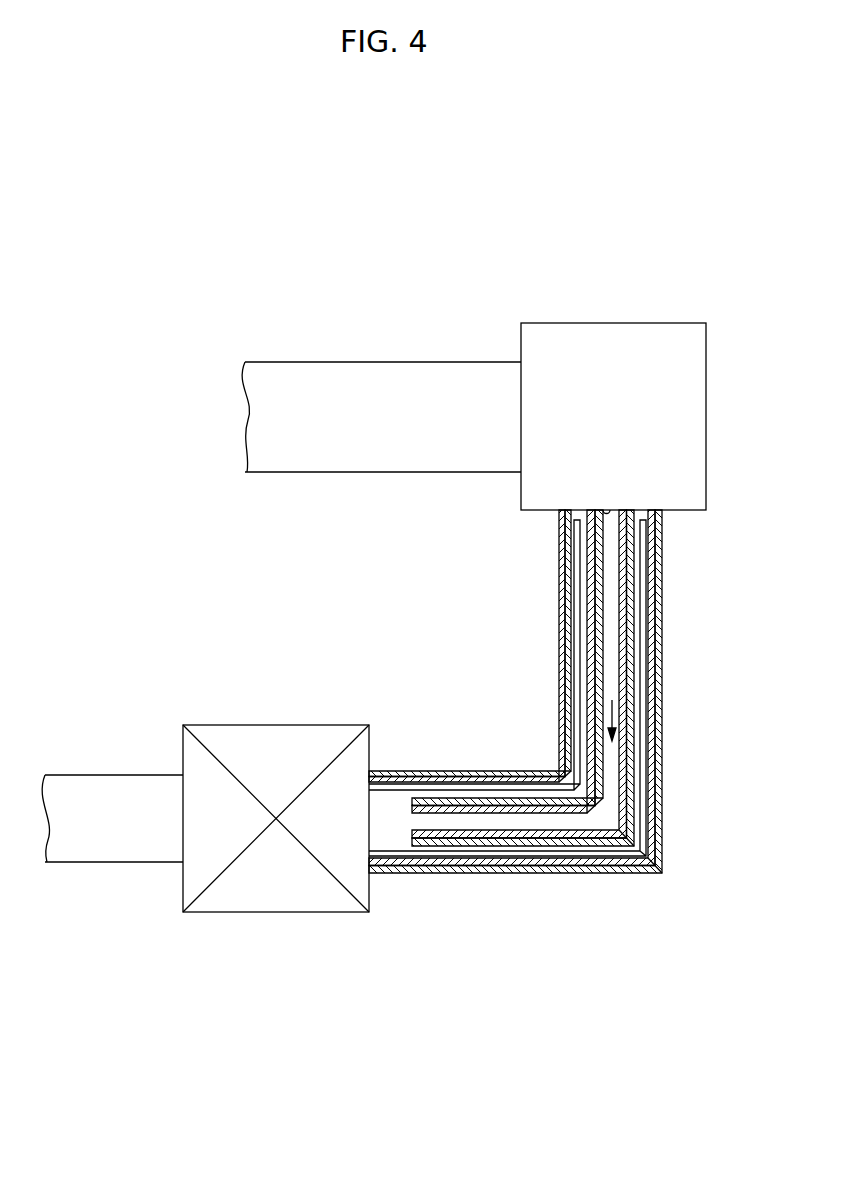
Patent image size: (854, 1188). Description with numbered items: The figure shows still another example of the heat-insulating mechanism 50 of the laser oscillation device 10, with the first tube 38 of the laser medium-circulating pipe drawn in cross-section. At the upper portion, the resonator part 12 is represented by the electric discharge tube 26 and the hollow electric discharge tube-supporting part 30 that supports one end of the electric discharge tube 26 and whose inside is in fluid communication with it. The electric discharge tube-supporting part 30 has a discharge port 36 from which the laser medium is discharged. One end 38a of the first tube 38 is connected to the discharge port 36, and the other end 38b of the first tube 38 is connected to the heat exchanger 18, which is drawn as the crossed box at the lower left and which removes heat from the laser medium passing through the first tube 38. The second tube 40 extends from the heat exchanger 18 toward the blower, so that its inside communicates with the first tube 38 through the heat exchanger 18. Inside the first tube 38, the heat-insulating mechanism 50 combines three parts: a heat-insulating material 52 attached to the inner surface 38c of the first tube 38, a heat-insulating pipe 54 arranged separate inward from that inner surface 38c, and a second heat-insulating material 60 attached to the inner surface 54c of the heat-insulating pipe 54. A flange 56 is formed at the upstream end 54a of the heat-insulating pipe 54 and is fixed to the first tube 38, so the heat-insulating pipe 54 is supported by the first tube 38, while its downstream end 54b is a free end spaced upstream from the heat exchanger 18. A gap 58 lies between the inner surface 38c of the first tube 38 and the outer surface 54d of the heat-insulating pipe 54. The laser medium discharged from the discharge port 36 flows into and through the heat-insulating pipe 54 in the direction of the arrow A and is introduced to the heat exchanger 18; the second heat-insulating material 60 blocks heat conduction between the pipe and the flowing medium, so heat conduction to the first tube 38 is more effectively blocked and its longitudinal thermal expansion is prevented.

The laser oscillation device 10 is at (616, 216).
The resonator part 12 is at (417, 330).
The heat exchanger 18 is at (265, 912).
The electric discharge tube 26 is at (334, 362).
The electric discharge tube-supporting part 30 is at (635, 323).
The discharge port 36 is at (602, 510).
The first tube 38 is at (462, 770).
The one end of the first tube 38a is at (562, 512).
The other end of the first tube 38b is at (382, 770).
The inner surface of the first tube 38c is at (572, 745).
The second tube 40 is at (100, 862).
The heat-insulating mechanism 50 is at (562, 884).
The heat-insulating material 52 is at (572, 607).
The heat-insulating pipe 54 is at (630, 602).
The upstream end of the heat-insulating pipe 54a is at (635, 510).
The downstream end of the heat-insulating pipe 54b is at (413, 848).
The inner surface of the heat-insulating pipe 54c is at (632, 783).
The outer surface of the heat-insulating pipe 54d is at (592, 655).
The flange 56 is at (578, 510).
The gap 58 is at (578, 696).
The second heat-insulating material 60 is at (622, 550).
The arrow A is at (628, 702).